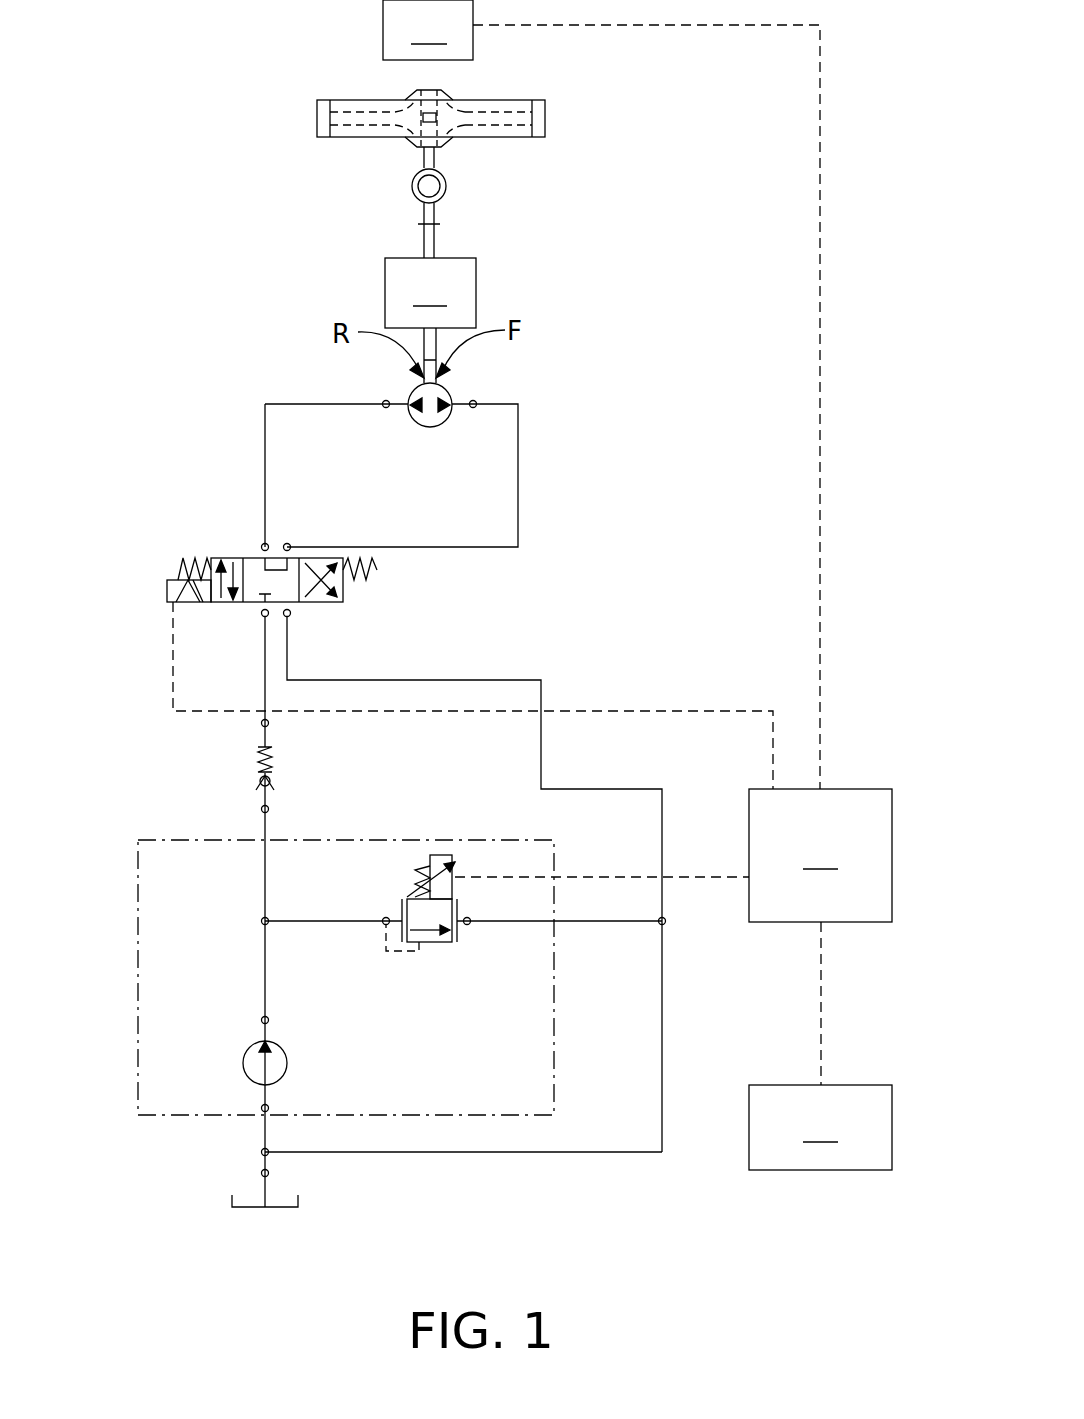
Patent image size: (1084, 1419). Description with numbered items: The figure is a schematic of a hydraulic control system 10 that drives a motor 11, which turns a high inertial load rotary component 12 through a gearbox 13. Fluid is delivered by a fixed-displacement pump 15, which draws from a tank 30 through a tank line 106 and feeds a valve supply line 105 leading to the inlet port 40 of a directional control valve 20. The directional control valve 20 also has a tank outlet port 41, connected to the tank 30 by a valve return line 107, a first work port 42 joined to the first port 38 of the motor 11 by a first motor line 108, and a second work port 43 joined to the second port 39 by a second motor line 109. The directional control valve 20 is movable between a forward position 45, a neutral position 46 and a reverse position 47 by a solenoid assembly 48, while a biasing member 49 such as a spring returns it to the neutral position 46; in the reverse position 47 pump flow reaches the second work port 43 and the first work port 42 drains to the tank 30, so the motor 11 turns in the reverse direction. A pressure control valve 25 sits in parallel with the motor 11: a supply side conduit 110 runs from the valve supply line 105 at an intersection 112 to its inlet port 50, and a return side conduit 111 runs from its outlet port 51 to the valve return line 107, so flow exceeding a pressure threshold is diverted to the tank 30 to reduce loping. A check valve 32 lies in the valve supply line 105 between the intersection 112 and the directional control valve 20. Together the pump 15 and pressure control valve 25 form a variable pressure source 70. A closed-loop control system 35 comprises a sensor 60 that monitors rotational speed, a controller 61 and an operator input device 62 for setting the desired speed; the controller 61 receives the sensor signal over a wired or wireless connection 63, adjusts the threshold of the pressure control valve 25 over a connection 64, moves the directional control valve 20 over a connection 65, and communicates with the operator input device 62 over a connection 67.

The hydraulic control system 10 is at (178, 100).
The motor 11 is at (452, 392).
The high inertial load rotary component 12 is at (545, 120).
The gearbox 13 is at (430, 293).
The pump 15 is at (243, 1063).
The directional control valve 20 is at (232, 558).
The pressure control valve 25 is at (438, 942).
The tank 30 is at (275, 1208).
The check valve 32 is at (262, 758).
The closed-loop control system 35 is at (860, 706).
The first port 38 is at (386, 408).
The second port 39 is at (473, 408).
The inlet port 40 is at (262, 614).
The tank outlet port 41 is at (290, 614).
The first work port 42 is at (262, 544).
The second work port 43 is at (290, 544).
The forward position 45 is at (231, 558).
The neutral position 46 is at (275, 614).
The reverse position 47 is at (343, 592).
The solenoid assembly 48 is at (167, 590).
The biasing member 49 is at (180, 562).
The inlet port 50 is at (386, 918).
The outlet port 51 is at (470, 918).
The sensor 60 is at (428, 30).
The controller 61 is at (820, 855).
The operator input device 62 is at (820, 1127).
The wired or wireless connection 63 is at (820, 175).
The wired or wireless connection 64 is at (696, 877).
The wired or wireless connection 65 is at (565, 711).
The power line 67 is at (821, 1003).
The variable pressure source 70 is at (138, 1000).
The valve supply line 105 is at (262, 983).
The tank line 106 is at (262, 1128).
The valve return line 107 is at (600, 789).
The first motor line 108 is at (325, 404).
The second motor line 109 is at (518, 480).
The supply side conduit 110 is at (300, 921).
The return side conduit 111 is at (562, 921).
The intersection 112 is at (262, 918).